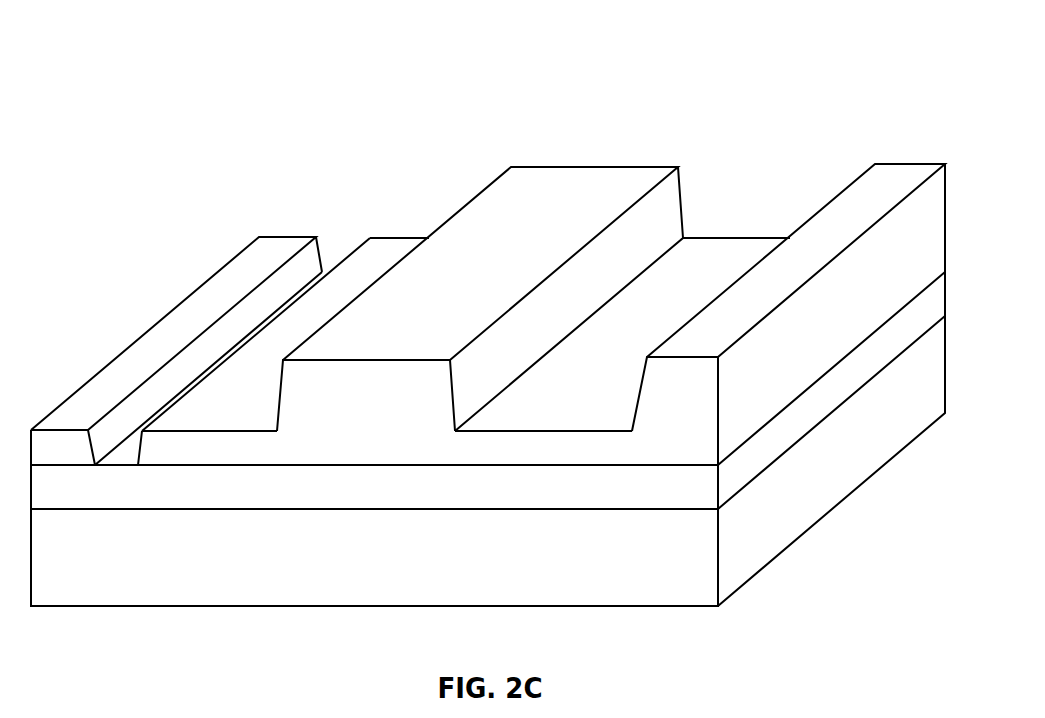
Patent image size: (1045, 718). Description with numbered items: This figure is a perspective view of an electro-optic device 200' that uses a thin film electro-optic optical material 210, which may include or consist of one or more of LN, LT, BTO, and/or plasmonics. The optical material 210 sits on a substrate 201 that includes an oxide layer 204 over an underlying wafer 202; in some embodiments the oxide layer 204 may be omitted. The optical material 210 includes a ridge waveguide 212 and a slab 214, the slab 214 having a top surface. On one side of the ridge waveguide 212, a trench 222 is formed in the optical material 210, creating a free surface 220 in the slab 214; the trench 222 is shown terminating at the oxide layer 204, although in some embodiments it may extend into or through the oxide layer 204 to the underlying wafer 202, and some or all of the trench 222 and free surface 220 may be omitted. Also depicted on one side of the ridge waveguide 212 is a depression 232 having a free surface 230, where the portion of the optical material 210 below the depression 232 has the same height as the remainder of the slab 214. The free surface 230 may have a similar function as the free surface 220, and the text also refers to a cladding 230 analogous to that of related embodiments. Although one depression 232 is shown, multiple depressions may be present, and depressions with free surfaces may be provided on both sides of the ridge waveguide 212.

The electro-optic device 200' is at (488, 346).
The substrate 201 is at (840, 452).
The underlying wafer 202 is at (380, 557).
The oxide layer 204 is at (380, 497).
The optical material 210 is at (362, 442).
The ridge waveguide 212 is at (408, 425).
The slab 214 is at (173, 483).
The free surface 220 is at (340, 250).
The trench 222 is at (160, 400).
The cladding / free surface 230 is at (798, 192).
The depression 232 is at (782, 178).